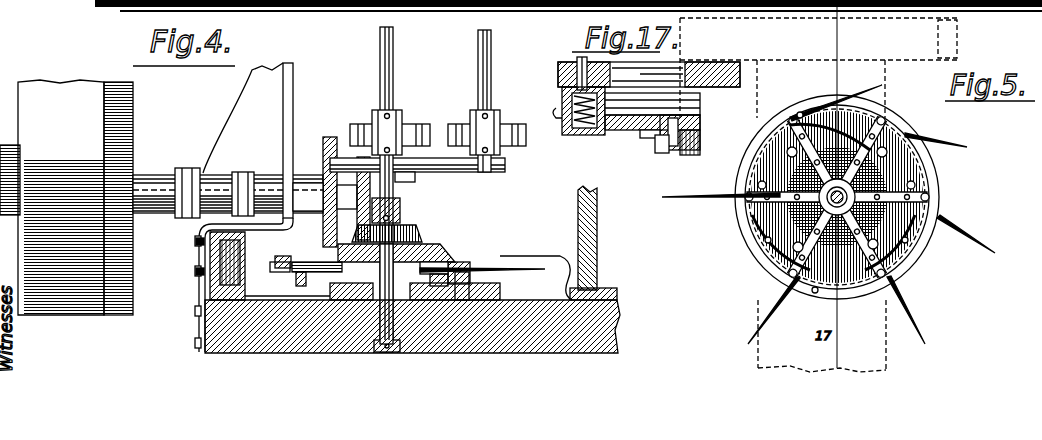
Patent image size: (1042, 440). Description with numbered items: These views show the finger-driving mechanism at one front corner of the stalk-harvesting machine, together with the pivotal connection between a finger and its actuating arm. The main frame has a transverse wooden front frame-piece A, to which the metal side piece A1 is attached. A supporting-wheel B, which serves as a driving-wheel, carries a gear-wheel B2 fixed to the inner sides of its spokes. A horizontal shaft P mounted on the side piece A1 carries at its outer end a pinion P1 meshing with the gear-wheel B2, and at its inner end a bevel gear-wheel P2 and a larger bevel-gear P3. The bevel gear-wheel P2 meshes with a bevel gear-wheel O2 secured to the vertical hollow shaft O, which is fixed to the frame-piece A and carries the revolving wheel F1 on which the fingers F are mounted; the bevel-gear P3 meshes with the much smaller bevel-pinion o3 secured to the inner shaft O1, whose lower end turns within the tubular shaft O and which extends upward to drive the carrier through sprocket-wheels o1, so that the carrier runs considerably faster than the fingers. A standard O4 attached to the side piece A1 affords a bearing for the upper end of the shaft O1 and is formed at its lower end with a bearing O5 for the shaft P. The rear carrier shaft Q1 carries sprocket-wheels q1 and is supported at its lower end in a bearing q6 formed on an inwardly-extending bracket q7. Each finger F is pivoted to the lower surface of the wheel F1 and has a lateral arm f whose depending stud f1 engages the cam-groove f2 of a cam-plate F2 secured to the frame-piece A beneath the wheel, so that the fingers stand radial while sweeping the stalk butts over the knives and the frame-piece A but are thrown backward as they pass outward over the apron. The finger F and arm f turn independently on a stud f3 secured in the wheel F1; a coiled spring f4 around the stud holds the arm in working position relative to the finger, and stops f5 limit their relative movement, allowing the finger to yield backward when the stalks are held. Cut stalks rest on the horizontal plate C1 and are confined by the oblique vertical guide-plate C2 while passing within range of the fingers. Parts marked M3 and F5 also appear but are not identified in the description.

In FIG. 4, the supporting-wheel B is at (52, 197).
In FIG. 4, the gear-wheel B2 is at (133, 97).
In FIG. 4, the pinion P1 is at (133, 176).
In FIG. 4, the bearing O5 is at (238, 192).
In FIG. 4, the standard O4 is at (283, 118).
In FIG. 4, the side piece A1 is at (199, 250).
In FIG. 4, the bolt M3 is at (199, 274).
In FIG. 4, the bevel gear-wheel P2 is at (326, 137).
In FIG. 4, the bevel-gear P3 is at (370, 180).
In FIG. 4, the bearing q6 is at (500, 166).
In FIG. 4, the bracket q7 is at (440, 173).
In FIG. 4, the shaft O1 is at (393, 45).
In FIG. 5, the shaft O1 is at (935, 170).
In FIG. 4, the sprocket-wheel o1 is at (405, 128).
In FIG. 4, the rear shaft Q1 is at (491, 68).
In FIG. 4, the sprocket-wheel q1 is at (505, 128).
In FIG. 4, the bevel-pinion o3 is at (400, 205).
In FIG. 4, the horizontal shaft P is at (390, 228).
In FIG. 4, the bevel gear-wheel O2 is at (445, 252).
In FIG. 4, the shaft O is at (420, 250).
In FIG. 5, the shaft O is at (815, 205).
In FIG. 4, the lateral arm f is at (468, 266).
In FIG. 17, the lateral arm f is at (650, 138).
In FIG. 5, the lateral arm f is at (822, 112).
In FIG. 4, the wheel F1 is at (490, 262).
In FIG. 17, the wheel F1 is at (695, 62).
In FIG. 5, the wheel F1 is at (925, 120).
In FIG. 4, the finger F is at (545, 269).
In FIG. 17, the finger F is at (690, 100).
In FIG. 5, the finger F is at (882, 88).
In FIG. 4, the cam-plate F2 is at (256, 254).
In FIG. 5, the cam-plate F2 is at (837, 197).
In FIG. 4, the frame part F5 is at (448, 300).
In FIG. 4, the depending stud f1 is at (485, 280).
In FIG. 17, the depending stud f1 is at (660, 152).
In FIG. 5, the depending stud f1 is at (868, 112).
In FIG. 4, the cam-groove f2 is at (500, 284).
In FIG. 5, the cam-groove f2 is at (745, 230).
In FIG. 17, the stud f3 is at (565, 68).
In FIG. 5, the stud f3 is at (798, 115).
In FIG. 17, the coiled spring f4 is at (560, 125).
In FIG. 17, the stop f5 is at (556, 113).
In FIG. 4, the frame-piece A is at (510, 330).
In FIG. 4, the horizontal plate C1 is at (536, 262).
In FIG. 4, the guide-plate C2 is at (597, 226).